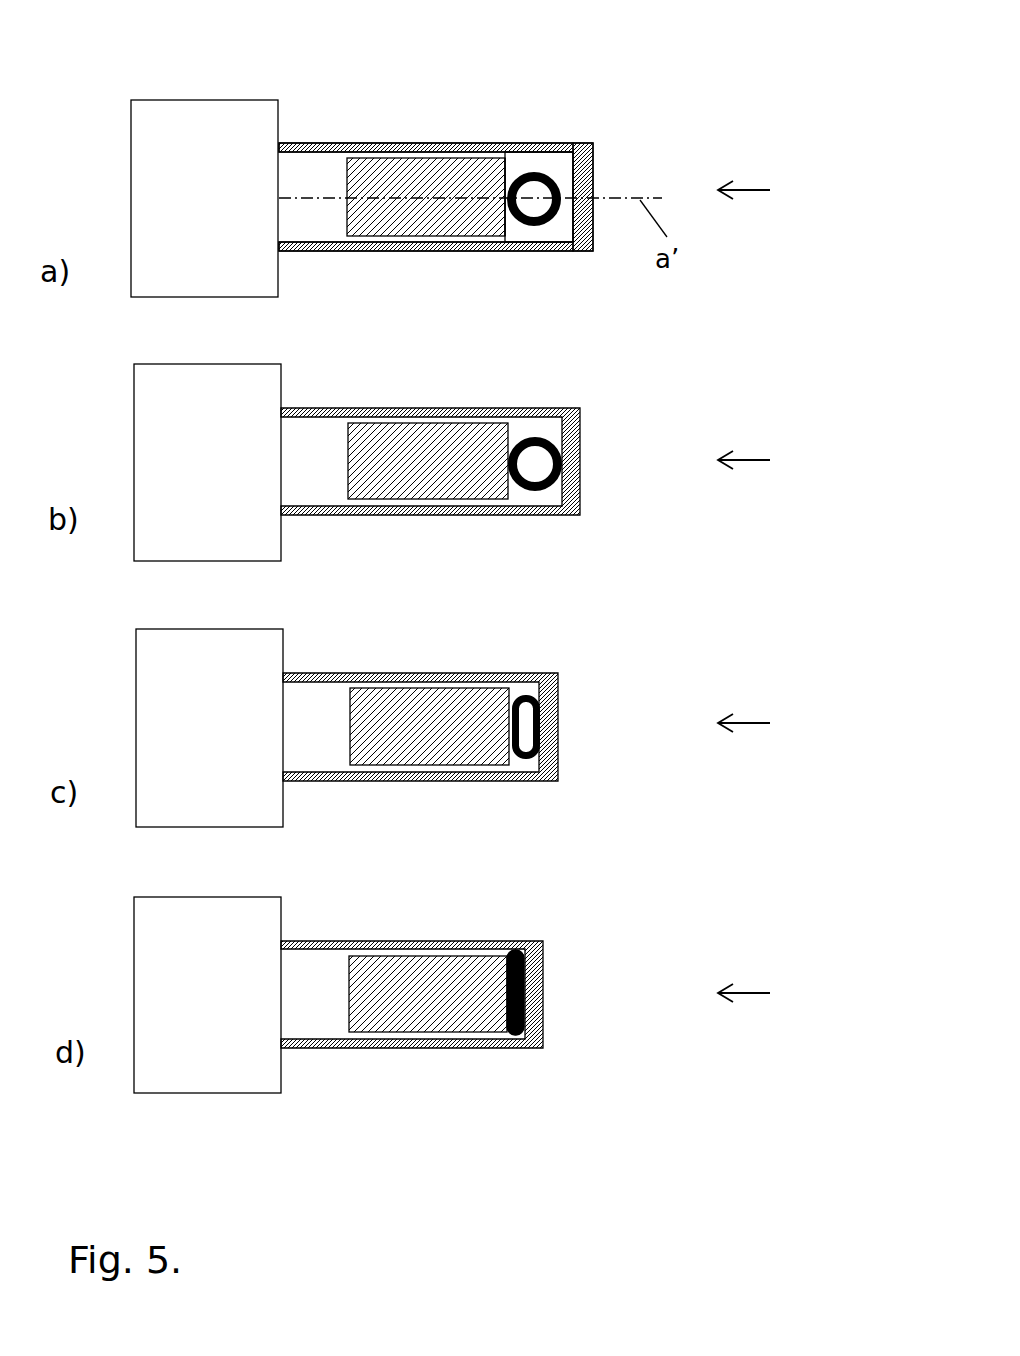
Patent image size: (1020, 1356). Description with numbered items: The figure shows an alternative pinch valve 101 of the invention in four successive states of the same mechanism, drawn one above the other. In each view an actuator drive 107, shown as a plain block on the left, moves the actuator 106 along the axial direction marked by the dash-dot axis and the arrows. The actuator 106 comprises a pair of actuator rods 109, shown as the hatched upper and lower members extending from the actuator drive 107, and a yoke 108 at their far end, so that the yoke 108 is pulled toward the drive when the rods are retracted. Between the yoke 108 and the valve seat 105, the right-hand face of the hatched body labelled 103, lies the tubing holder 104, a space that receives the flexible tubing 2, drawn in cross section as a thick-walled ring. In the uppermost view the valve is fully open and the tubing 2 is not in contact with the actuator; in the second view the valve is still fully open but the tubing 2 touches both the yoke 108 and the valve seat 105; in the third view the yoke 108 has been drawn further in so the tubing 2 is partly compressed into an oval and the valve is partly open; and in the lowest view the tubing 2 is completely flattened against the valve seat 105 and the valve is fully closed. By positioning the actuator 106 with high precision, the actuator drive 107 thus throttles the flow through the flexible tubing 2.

The flexible tubing 2 is at (534, 172).
The pinch valve 101 is at (774, 593).
The piston / plunger 103 is at (405, 176).
The tubing holder 104 is at (562, 165).
The valve seat 105 is at (505, 195).
The actuator 106 is at (345, 143).
The actuator drive 107 is at (160, 177).
The yoke 108 is at (593, 163).
The actuator rods 109 is at (303, 248).